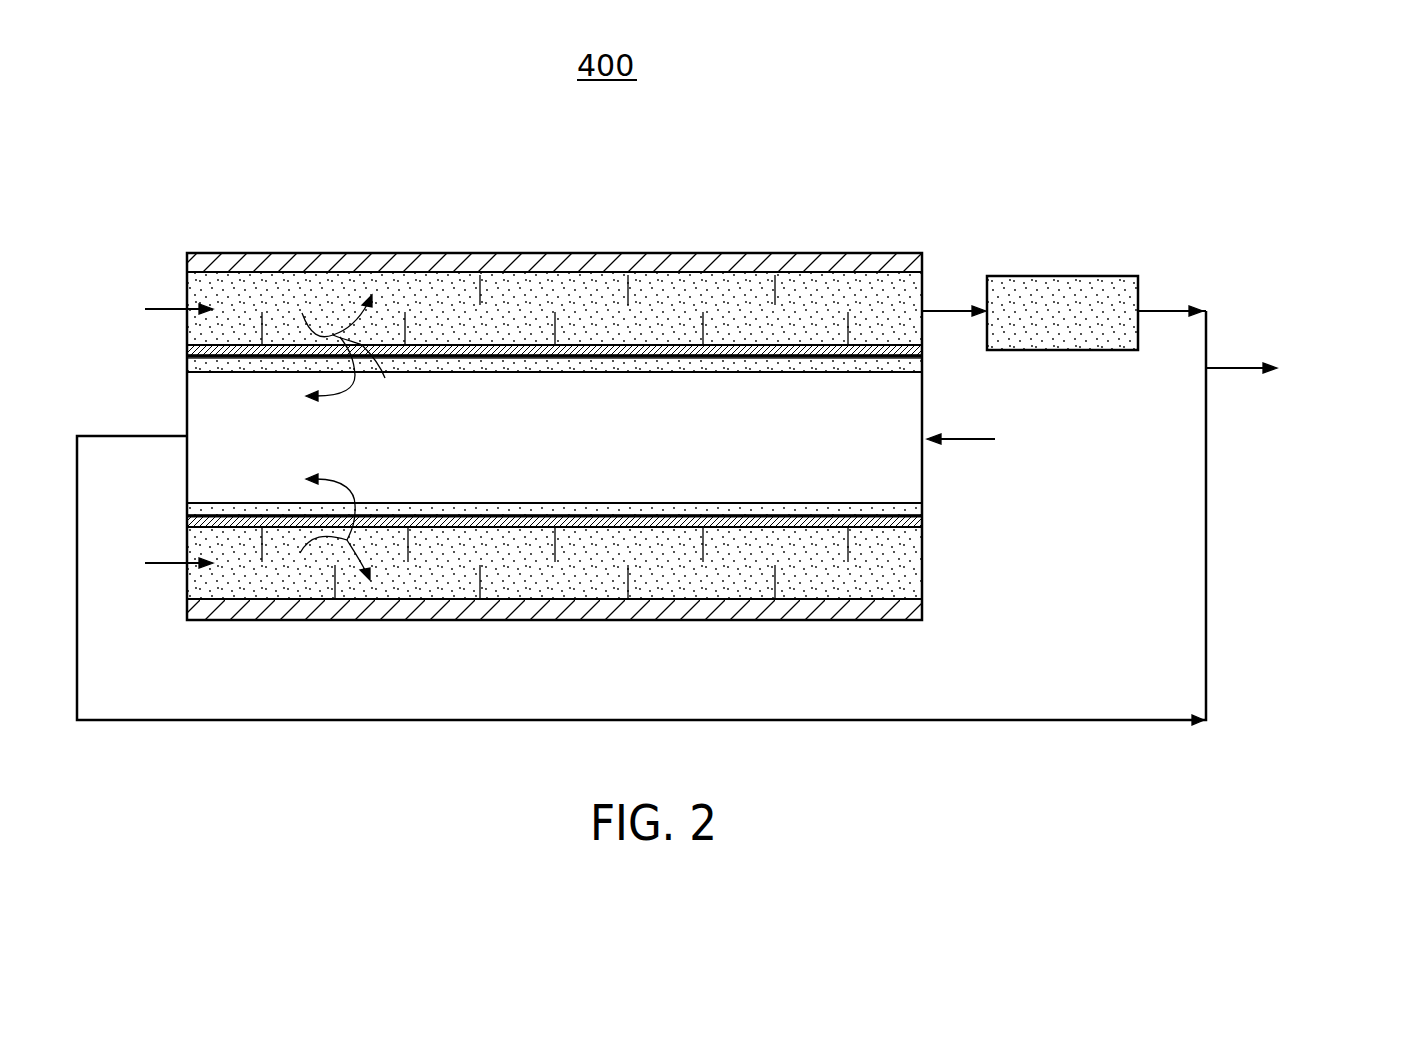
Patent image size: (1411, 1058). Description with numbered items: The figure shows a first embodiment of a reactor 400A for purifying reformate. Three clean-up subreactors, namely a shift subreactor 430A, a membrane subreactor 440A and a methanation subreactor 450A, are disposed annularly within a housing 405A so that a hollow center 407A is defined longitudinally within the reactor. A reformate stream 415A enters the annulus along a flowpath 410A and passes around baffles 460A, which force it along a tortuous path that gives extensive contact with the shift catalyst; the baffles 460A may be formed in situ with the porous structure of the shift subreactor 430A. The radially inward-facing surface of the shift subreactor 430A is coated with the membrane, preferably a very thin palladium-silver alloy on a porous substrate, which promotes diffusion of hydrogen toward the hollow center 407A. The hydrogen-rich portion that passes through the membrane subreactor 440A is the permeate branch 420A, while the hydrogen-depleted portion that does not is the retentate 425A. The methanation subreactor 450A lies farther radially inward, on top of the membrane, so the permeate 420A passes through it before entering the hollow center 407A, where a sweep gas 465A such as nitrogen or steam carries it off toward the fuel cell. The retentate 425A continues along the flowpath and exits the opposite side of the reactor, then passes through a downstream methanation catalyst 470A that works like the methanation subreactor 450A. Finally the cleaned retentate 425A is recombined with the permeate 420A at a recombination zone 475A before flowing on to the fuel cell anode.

The reactor 400A is at (827, 167).
The housing 405A is at (893, 253).
The hollow center 407A is at (812, 448).
The flowpath 410A is at (150, 309).
The reformate stream 415A is at (385, 378).
The permeate branch 420A is at (353, 420).
The retentate 425A is at (945, 311).
The shift subreactor 430A is at (243, 271).
The membrane subreactor 440A is at (462, 345).
The methanation subreactor 450A is at (578, 373).
The baffles 460A is at (333, 308).
The sweep gas 465A is at (978, 440).
The downstream methanation catalyst 470A is at (1063, 292).
The recombination zone 475A is at (1210, 365).